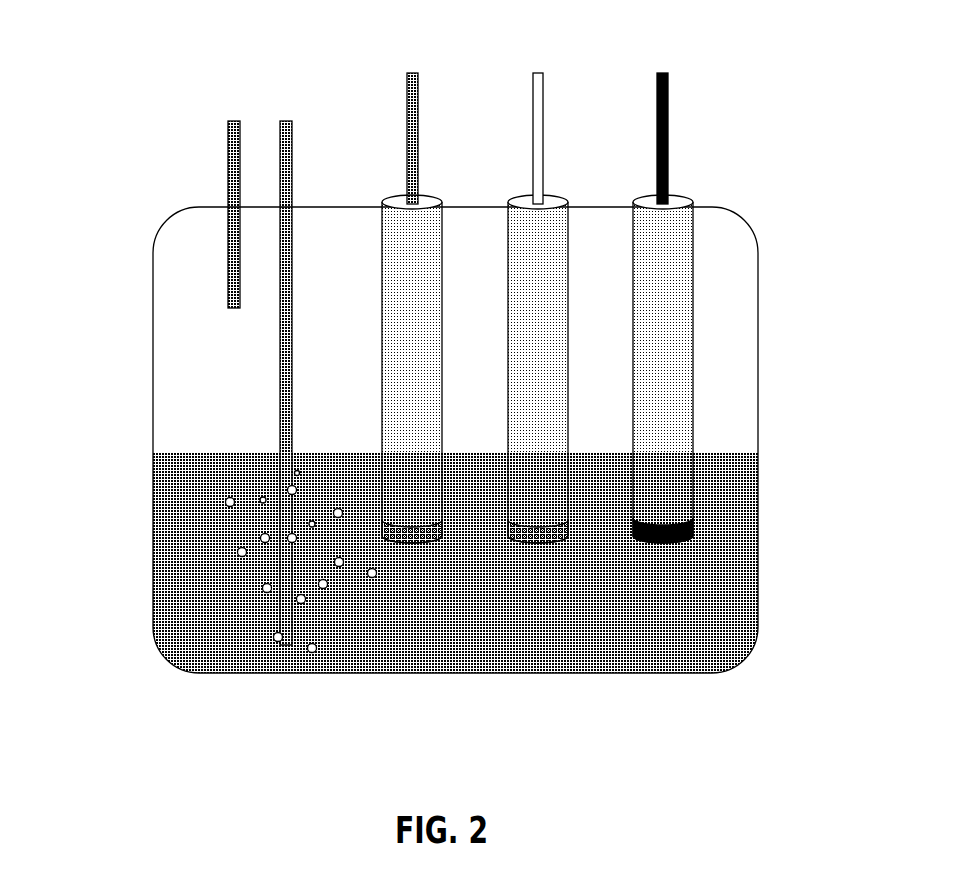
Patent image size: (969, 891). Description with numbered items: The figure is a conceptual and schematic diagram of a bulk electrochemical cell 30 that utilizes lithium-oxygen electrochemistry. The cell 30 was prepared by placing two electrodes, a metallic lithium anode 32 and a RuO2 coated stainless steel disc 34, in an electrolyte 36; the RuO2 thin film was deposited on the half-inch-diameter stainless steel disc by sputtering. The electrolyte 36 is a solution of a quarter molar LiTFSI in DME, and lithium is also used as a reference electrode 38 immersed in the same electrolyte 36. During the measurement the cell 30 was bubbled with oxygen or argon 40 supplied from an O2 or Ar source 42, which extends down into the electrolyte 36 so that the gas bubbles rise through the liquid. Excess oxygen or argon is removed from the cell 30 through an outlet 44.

The bulk electrochemical cell 30 is at (105, 93).
The metallic lithium anode 32 is at (422, 543).
The RuO2 coated stainless steel disc 34 is at (695, 523).
The electrolyte 36 is at (177, 547).
The reference electrode 38 is at (555, 537).
The oxygen or argon 40 is at (242, 557).
The O2 or Ar source 42 is at (280, 377).
The outlet 44 is at (227, 272).